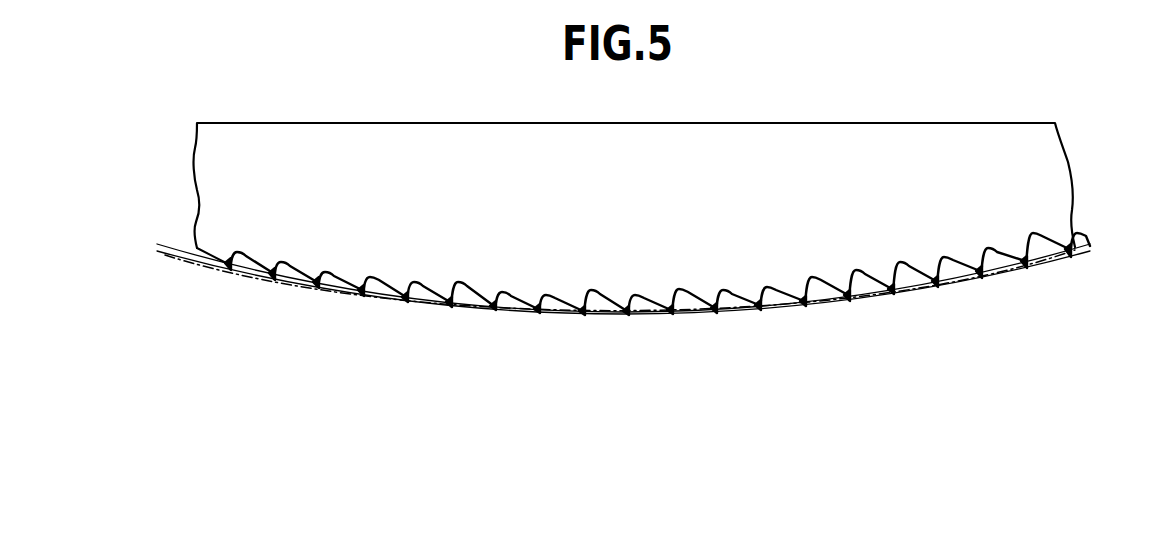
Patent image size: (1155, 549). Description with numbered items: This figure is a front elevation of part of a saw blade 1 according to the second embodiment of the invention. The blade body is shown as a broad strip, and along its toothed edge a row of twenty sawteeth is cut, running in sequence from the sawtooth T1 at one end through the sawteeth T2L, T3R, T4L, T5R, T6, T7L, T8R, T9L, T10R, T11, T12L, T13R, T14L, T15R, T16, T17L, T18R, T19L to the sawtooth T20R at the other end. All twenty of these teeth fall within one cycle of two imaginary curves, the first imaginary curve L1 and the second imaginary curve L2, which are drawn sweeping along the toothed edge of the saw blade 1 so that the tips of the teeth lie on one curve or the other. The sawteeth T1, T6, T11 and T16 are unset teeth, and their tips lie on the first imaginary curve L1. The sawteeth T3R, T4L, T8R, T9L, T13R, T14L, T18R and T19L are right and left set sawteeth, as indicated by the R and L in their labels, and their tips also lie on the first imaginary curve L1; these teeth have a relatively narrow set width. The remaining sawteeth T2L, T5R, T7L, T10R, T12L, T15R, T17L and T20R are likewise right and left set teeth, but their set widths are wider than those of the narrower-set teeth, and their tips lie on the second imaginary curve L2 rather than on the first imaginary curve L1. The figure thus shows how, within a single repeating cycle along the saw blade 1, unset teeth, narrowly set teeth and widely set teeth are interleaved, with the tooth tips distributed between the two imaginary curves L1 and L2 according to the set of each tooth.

The saw blade 1 is at (852, 143).
The first imaginary curve L1 is at (165, 256).
The second imaginary curve L2 is at (172, 243).
The sawtooth T1 is at (231, 270).
The left set sawtooth T2L is at (275, 280).
The right set sawtooth T3R is at (319, 288).
The left set sawtooth T4L is at (364, 296).
The right set sawtooth T5R is at (408, 302).
The sawtooth T6 is at (452, 307).
The left set sawtooth T7L is at (496, 310).
The right set sawtooth T8R is at (540, 313).
The left set sawtooth T9L is at (585, 315).
The right set sawtooth T10R is at (629, 315).
The sawtooth T11 is at (673, 314).
The left set sawtooth T12L is at (717, 313).
The right set sawtooth T13R is at (761, 310).
The left set sawtooth T14L is at (806, 306).
The right set sawtooth T15R is at (850, 301).
The sawtooth T16 is at (894, 294).
The left set sawtooth T17L is at (938, 287).
The right set sawtooth T18R is at (982, 278).
The left set sawtooth T19L is at (1027, 268).
The right set sawtooth T20R is at (1071, 257).